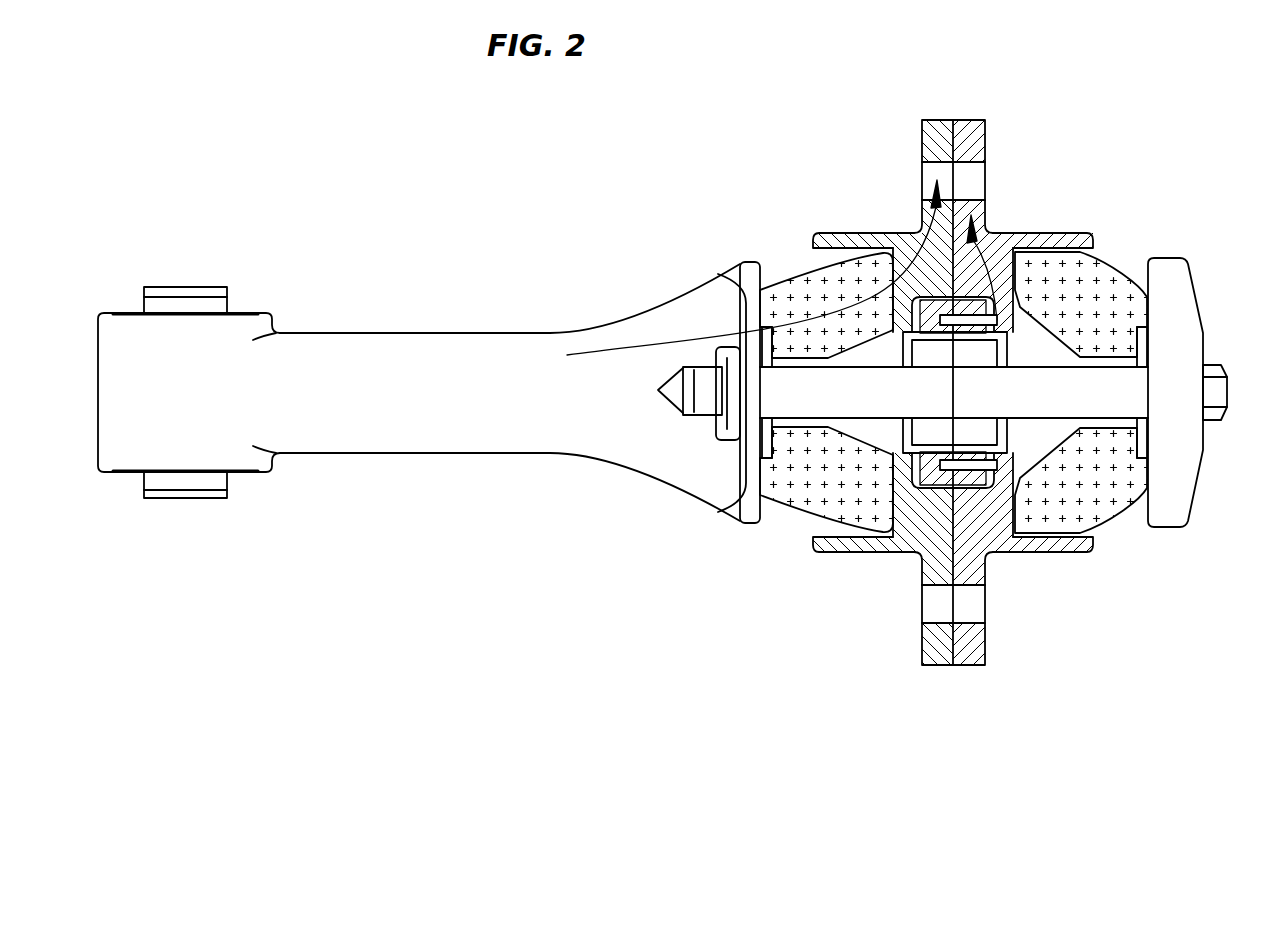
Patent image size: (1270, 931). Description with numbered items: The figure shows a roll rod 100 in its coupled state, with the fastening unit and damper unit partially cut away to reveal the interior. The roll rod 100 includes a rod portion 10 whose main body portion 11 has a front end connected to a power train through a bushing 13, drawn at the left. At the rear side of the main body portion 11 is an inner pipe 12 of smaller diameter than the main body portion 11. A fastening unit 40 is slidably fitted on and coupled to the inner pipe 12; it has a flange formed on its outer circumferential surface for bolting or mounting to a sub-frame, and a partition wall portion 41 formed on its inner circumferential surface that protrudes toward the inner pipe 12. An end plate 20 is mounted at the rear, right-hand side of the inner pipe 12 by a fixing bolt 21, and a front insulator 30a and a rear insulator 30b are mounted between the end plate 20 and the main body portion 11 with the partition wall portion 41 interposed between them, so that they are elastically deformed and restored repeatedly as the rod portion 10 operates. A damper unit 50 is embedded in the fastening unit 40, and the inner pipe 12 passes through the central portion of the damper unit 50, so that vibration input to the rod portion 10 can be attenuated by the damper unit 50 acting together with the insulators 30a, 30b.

The roll rod 100 is at (394, 250).
The rod portion 10 is at (508, 453).
The main body portion 11 is at (393, 415).
The inner pipe 12 is at (786, 392).
The bushing 13 is at (170, 476).
The end plate 20 is at (1185, 502).
The fixing bolt 21 is at (703, 402).
The front insulator 30a is at (812, 290).
The rear insulator 30b is at (1088, 297).
The fastening unit 40 is at (965, 560).
The partition wall portion 41 is at (900, 487).
The damper unit 50 is at (1010, 453).